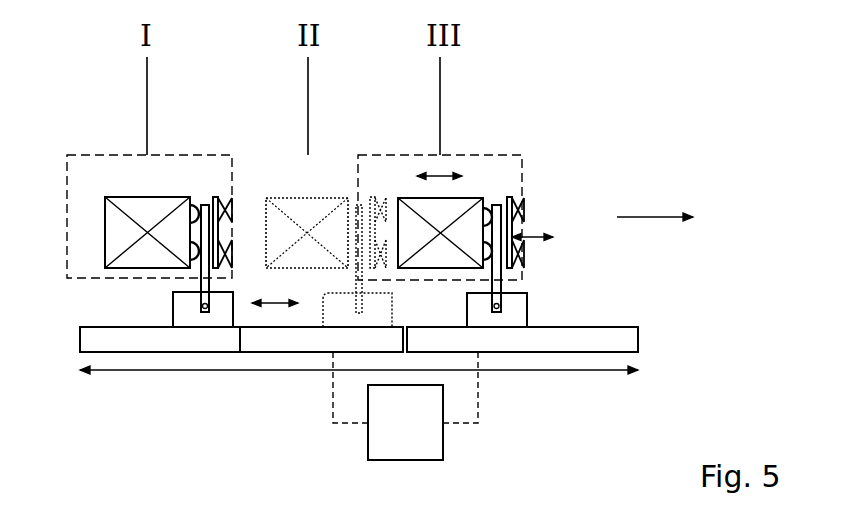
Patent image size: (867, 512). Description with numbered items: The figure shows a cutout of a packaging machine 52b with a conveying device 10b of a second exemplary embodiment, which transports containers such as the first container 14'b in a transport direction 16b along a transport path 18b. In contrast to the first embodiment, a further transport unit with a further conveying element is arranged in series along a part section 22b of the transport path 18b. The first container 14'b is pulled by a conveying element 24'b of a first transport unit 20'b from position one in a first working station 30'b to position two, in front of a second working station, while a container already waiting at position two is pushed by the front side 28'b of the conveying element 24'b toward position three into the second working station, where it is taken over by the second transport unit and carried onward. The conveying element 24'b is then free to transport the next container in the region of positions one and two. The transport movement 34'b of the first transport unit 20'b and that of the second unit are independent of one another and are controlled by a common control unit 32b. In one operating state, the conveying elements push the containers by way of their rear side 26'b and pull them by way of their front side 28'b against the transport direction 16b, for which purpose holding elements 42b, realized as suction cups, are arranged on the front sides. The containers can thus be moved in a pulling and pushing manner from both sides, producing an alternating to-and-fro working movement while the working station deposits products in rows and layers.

The conveying device 10b is at (599, 105).
The packaging machine 52b is at (630, 56).
The first container 14'b is at (236, 186).
The transport direction 16b is at (653, 215).
The transport path 18b is at (409, 381).
The part section 22b is at (633, 372).
The first transport unit 20'b is at (160, 387).
The conveying element 24'b is at (232, 348).
The rear side 26'b is at (188, 259).
The front side 28'b is at (294, 323).
The first working station 30'b is at (149, 174).
The control unit 32b is at (428, 443).
The transport movement 34'b is at (271, 216).
The holding elements 42b is at (230, 212).